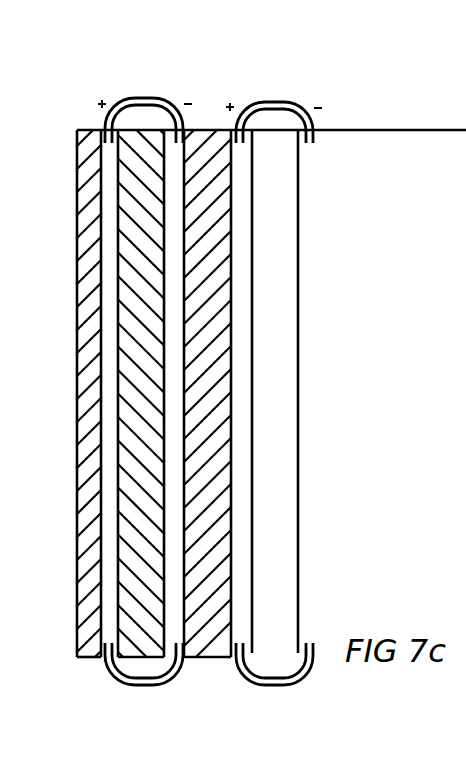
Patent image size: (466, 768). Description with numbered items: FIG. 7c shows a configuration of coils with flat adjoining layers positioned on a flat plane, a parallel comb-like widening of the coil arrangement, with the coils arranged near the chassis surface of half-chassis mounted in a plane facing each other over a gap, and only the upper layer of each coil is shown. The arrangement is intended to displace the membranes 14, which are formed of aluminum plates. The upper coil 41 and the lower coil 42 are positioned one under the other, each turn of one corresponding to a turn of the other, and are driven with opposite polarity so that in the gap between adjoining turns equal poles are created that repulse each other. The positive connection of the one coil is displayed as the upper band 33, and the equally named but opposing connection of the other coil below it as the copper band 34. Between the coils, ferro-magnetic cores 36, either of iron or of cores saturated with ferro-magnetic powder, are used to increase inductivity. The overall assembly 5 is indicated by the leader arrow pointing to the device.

The battery / electrochemical cell assembly 5 is at (312, 305).
The membrane 14 is at (81, 352).
The upper band 33 is at (242, 110).
The copper band 34 is at (305, 108).
The ferro-magnetic core 36 is at (157, 495).
The upper coil 41 is at (128, 97).
The lower coil 42 is at (273, 101).